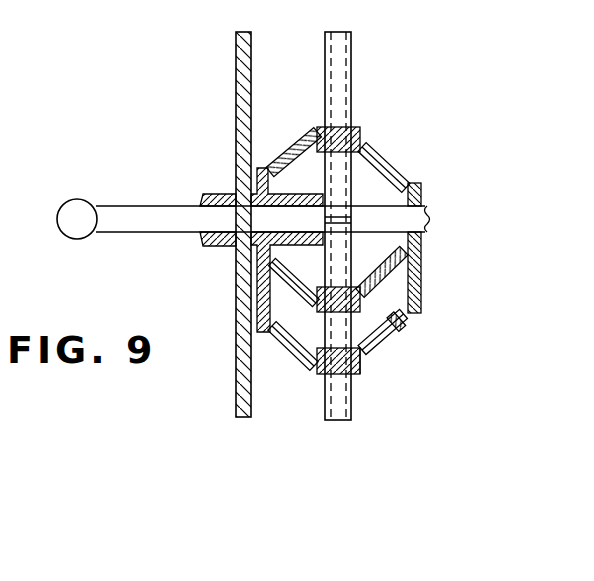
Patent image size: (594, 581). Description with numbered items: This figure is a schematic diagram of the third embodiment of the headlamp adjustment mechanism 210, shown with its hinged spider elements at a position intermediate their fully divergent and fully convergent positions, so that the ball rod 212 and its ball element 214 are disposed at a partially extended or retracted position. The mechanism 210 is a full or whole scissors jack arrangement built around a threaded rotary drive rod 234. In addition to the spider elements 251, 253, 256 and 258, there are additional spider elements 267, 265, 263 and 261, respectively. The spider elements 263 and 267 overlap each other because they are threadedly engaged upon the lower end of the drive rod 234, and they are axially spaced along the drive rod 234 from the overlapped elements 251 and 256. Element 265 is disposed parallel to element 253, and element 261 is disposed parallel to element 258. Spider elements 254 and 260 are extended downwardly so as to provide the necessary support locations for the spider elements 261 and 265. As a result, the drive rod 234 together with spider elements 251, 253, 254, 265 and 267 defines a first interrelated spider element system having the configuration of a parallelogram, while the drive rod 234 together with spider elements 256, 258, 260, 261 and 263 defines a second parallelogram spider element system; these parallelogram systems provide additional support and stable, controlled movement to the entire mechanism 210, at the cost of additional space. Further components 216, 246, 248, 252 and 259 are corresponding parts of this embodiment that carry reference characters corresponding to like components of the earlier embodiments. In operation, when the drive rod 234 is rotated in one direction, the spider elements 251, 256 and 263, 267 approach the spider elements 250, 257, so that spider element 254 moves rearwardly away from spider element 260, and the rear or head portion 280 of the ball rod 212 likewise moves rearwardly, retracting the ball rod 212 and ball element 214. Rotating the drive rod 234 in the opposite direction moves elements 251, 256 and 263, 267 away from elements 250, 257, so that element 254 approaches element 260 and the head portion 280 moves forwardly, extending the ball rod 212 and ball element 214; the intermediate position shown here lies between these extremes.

The headlamp adjustment mechanism 210 is at (486, 113).
The ball rod 212 is at (142, 230).
The ball element 214 is at (84, 208).
The bushing 216 is at (222, 194).
The threaded rotary drive rod 234 is at (347, 62).
The bracket assembly 246 is at (445, 324).
The upper bracket 248 is at (360, 111).
The spider element 250 is at (357, 142).
The spider element 251 is at (357, 297).
The strut 252 is at (395, 166).
The spider element 253 is at (422, 260).
The spider element 254 is at (422, 285).
The spider element 256 is at (390, 324).
The spider element 257 is at (353, 126).
The spider element 258 is at (276, 270).
The hatched strut 259 is at (288, 152).
The spider element 260 is at (262, 308).
The spider element 261 is at (298, 360).
The spider element 263 is at (348, 385).
The spider element 265 is at (372, 340).
The spider element 267 is at (362, 362).
The rear or head portion 280 is at (430, 212).